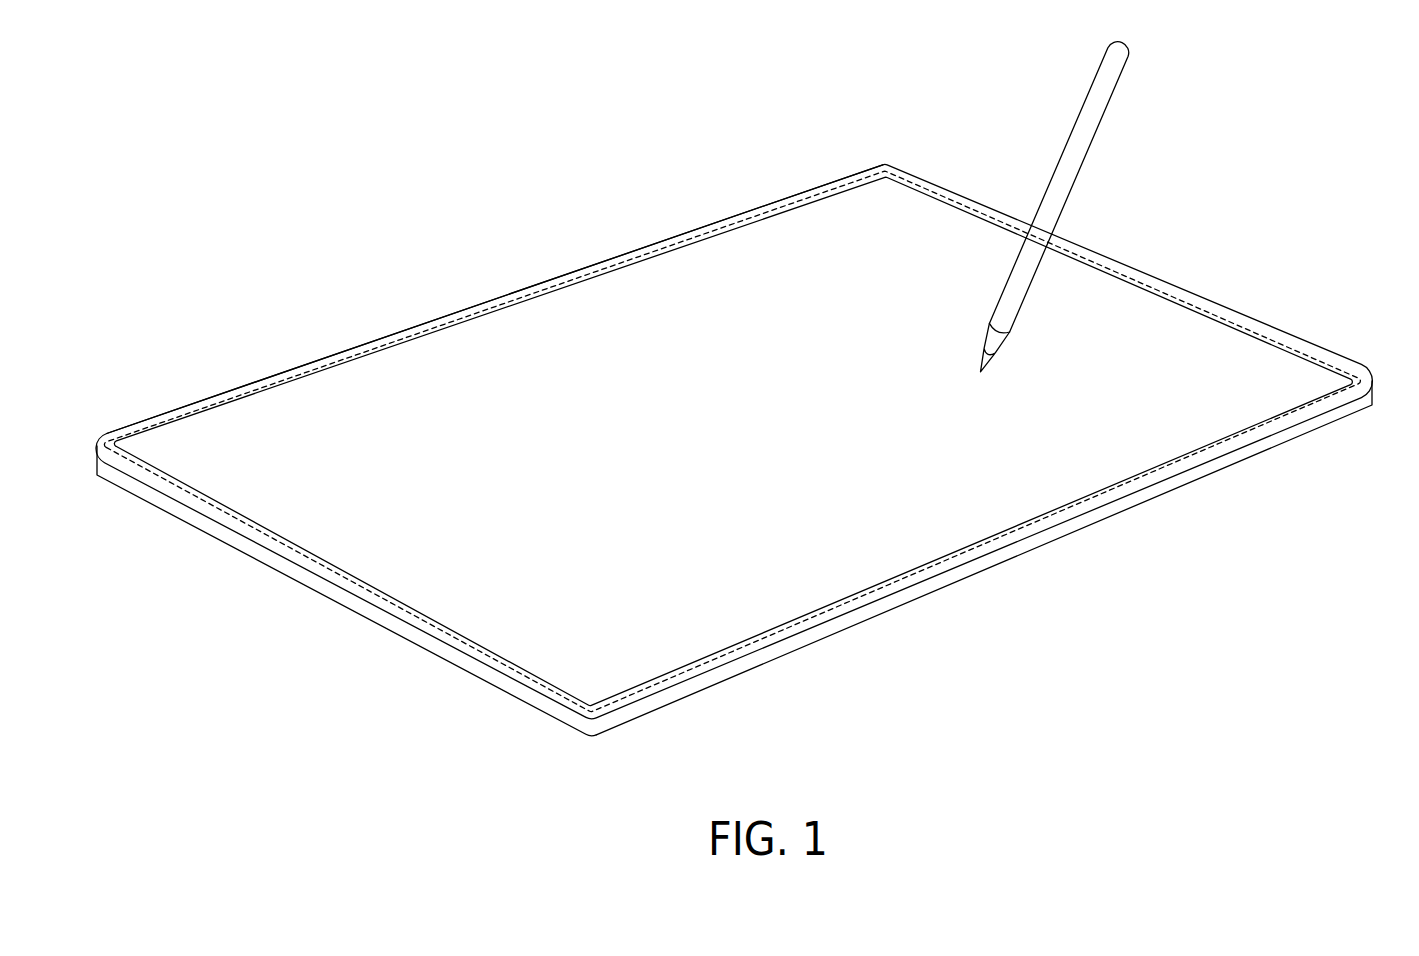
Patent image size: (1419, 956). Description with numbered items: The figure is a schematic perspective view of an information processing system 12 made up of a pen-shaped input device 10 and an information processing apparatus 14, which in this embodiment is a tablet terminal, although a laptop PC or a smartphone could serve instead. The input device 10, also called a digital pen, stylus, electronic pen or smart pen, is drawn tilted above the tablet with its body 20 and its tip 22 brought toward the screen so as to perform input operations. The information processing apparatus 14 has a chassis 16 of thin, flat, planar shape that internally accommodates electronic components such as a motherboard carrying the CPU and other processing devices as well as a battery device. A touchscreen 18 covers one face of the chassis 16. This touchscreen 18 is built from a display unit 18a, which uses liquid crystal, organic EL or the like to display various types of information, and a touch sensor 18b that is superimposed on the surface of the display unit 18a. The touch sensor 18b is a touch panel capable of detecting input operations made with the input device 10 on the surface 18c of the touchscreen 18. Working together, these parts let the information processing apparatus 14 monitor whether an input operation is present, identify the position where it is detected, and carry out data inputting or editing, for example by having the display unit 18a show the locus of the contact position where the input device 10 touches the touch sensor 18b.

The input device 10 is at (1060, 110).
The information processing system 12 is at (297, 165).
The information processing apparatus 14 is at (450, 303).
The chassis 16 is at (838, 632).
The touchscreen 18 is at (562, 345).
The display unit 18a is at (680, 283).
The touch sensor 18b is at (347, 580).
The surface 18c is at (680, 283).
The pen body 20 is at (1073, 155).
The pen tip 22 is at (991, 354).